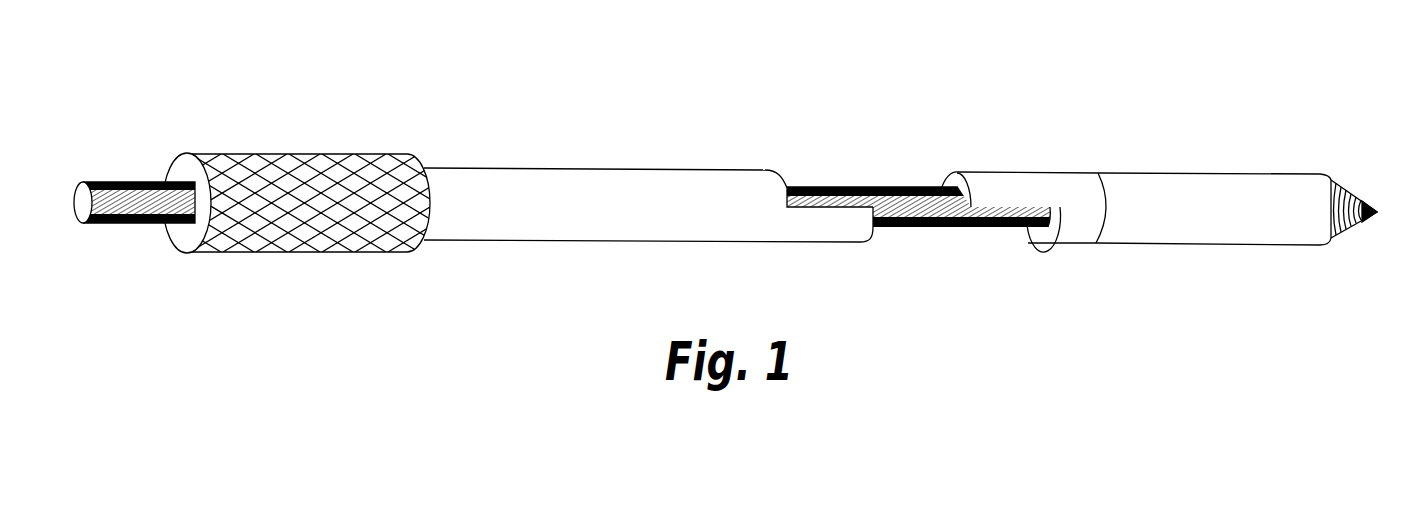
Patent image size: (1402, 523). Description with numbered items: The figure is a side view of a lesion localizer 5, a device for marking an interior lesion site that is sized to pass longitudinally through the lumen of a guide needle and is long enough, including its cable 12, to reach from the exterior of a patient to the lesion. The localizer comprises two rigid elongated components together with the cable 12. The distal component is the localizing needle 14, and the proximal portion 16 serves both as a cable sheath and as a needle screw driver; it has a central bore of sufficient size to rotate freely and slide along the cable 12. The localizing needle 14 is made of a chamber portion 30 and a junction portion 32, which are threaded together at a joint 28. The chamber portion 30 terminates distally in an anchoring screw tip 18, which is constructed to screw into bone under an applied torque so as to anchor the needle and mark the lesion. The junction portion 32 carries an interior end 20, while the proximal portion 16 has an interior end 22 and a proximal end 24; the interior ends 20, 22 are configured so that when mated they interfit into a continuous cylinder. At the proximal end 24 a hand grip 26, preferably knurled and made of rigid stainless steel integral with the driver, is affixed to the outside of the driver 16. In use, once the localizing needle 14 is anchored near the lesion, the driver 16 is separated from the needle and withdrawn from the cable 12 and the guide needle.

The lesion localizer 5 is at (648, 182).
The cable 12 is at (132, 178).
The localizing needle 14 is at (1159, 193).
The proximal portion 16 is at (565, 150).
The screw tip 18 is at (1368, 232).
The interior end 20 is at (990, 187).
The interior end 22 is at (737, 188).
The proximal end 24 is at (175, 233).
The hand grip 26 is at (330, 220).
The joint 28 is at (1100, 172).
The chamber portion 30 is at (1203, 225).
The junction portion 32 is at (1080, 223).